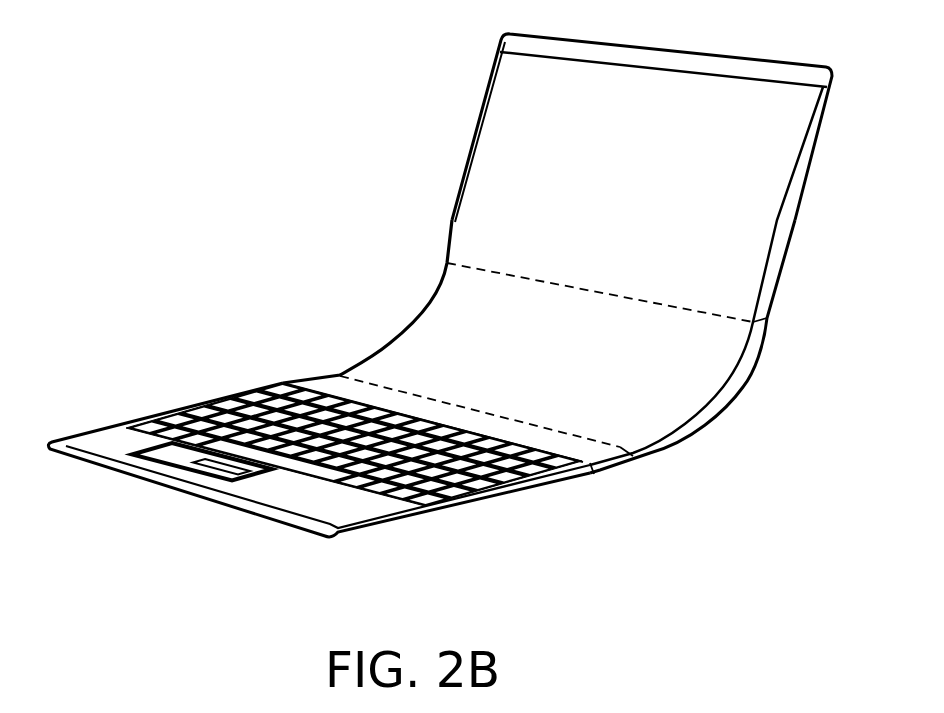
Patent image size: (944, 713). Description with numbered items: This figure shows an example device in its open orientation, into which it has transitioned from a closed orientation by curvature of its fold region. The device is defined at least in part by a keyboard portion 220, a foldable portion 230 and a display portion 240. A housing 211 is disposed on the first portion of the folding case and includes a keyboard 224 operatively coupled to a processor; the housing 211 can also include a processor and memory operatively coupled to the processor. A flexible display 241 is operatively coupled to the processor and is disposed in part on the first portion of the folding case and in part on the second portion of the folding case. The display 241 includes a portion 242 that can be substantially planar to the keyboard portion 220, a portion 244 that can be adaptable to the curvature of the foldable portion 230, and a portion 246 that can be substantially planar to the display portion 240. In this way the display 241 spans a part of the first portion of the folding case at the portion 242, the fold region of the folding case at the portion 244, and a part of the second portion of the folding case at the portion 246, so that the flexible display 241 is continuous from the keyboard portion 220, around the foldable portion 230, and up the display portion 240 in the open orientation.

The housing 211 is at (480, 512).
The keyboard portion 220 is at (263, 519).
The keyboard 224 is at (223, 397).
The foldable portion 230 is at (692, 430).
The display portion 240 is at (770, 287).
The flexible display 241 is at (569, 345).
The portion of the display 242 is at (325, 386).
The portion of the display 244 is at (425, 345).
The portion of the display 246 is at (470, 215).